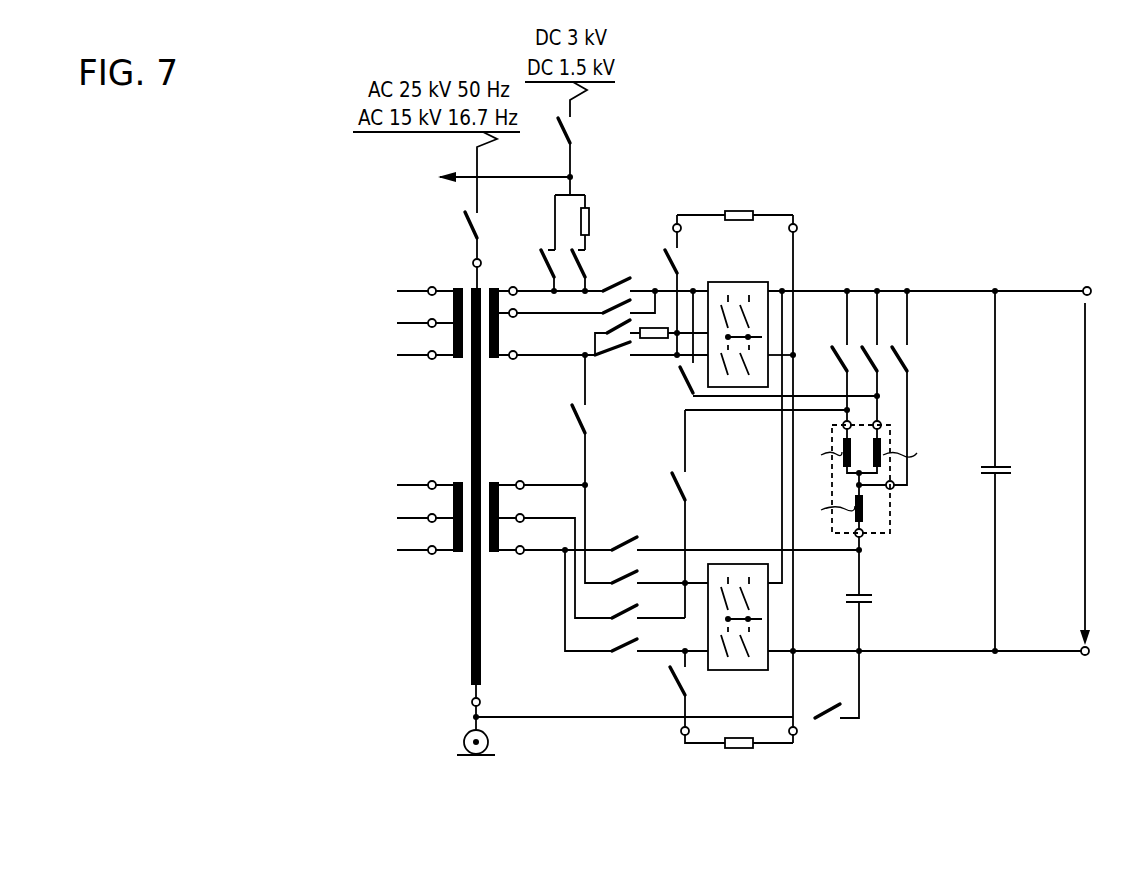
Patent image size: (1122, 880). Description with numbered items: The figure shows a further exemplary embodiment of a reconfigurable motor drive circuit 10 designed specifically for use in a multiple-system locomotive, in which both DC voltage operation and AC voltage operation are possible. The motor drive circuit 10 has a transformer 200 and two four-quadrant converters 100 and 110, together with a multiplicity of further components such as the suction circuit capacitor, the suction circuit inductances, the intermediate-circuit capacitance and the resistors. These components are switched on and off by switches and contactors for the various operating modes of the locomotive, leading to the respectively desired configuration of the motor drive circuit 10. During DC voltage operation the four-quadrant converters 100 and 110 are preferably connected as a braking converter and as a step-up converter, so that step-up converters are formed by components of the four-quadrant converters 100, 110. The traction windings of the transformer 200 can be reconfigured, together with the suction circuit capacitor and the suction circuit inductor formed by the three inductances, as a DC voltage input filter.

The motor drive circuit 10 is at (988, 706).
The four-quadrant converter 100 is at (736, 281).
The four-quadrant converter 110 is at (735, 671).
The transformer 200 is at (423, 244).